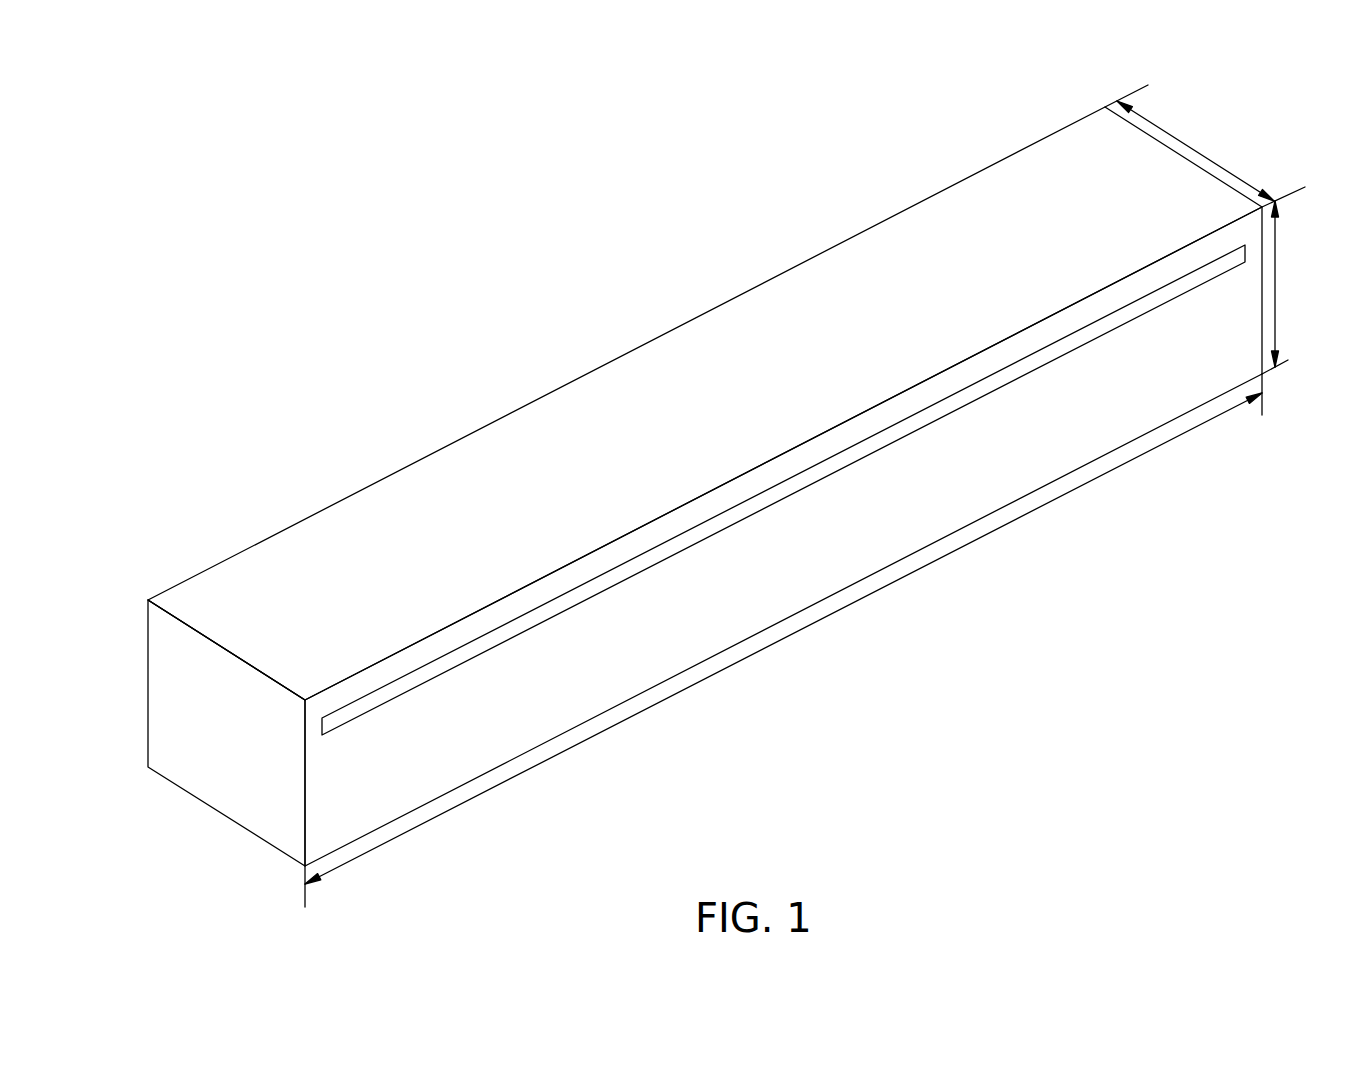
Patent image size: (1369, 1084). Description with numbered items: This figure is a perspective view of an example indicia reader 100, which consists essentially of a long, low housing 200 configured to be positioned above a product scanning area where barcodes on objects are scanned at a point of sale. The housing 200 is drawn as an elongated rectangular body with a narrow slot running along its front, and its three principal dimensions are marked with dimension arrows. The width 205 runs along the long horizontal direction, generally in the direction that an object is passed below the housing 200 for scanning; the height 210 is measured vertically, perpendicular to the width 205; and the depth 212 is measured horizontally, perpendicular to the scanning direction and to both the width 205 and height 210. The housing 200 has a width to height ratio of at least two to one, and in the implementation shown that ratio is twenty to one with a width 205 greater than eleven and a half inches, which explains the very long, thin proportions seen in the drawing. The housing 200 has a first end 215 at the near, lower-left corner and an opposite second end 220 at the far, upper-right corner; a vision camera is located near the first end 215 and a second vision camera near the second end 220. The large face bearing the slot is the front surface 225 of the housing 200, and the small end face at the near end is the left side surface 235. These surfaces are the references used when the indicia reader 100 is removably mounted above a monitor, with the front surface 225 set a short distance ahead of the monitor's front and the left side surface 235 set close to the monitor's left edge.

The indicia reader 100 is at (655, 465).
The housing 200 is at (613, 346).
The width 205 is at (780, 642).
The height 210 is at (1277, 287).
The depth 212 is at (1198, 152).
The first end 215 is at (129, 585).
The second end 220 is at (1078, 98).
The front surface 225 is at (323, 757).
The left side surface 235 is at (163, 697).